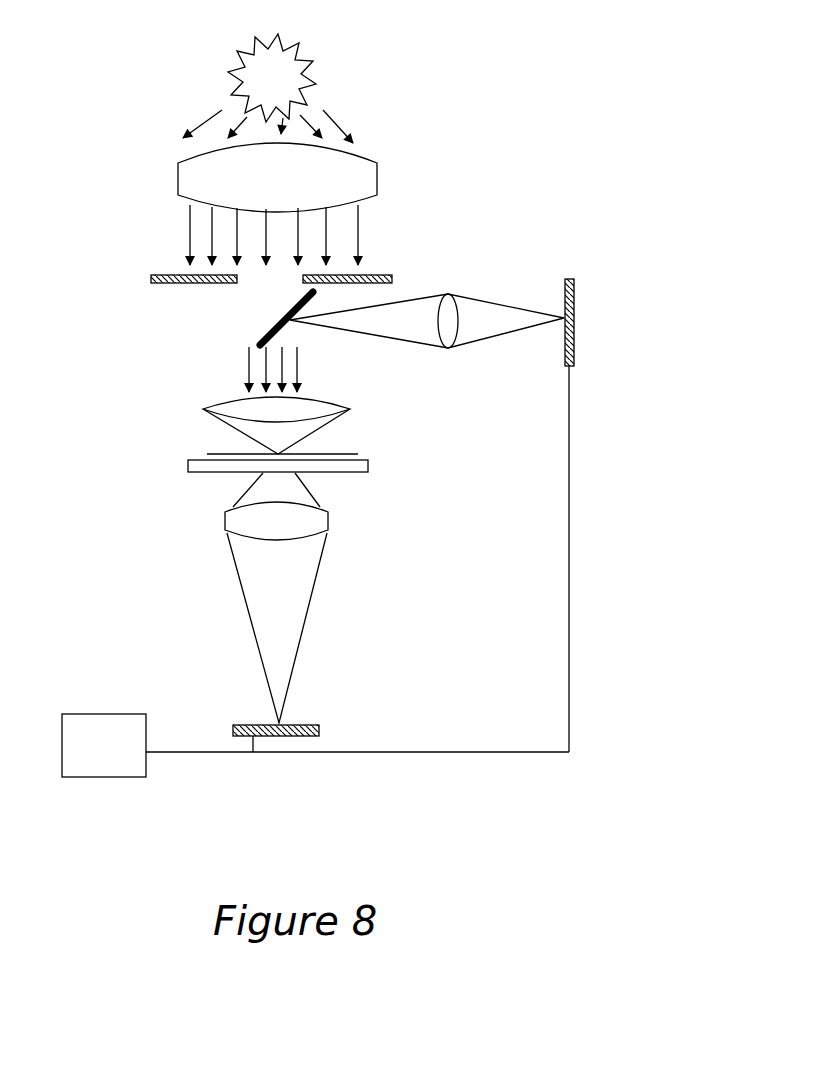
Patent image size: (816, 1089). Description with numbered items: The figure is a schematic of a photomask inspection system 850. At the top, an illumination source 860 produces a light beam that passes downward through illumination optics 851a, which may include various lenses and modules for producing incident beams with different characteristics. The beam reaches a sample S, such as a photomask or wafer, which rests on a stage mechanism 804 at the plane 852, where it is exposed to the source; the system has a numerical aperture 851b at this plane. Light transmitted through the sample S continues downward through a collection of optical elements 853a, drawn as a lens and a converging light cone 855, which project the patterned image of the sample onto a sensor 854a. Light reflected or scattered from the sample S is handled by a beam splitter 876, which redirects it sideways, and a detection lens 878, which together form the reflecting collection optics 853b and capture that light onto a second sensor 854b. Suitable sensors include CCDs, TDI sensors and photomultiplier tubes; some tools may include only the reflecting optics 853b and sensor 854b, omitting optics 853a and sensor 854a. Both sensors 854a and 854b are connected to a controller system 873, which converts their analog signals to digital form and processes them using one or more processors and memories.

The inspection system 850 is at (402, 77).
The illumination source 860 is at (302, 52).
The illumination optics 851a is at (127, 178).
The beam splitter 876 is at (280, 322).
The numerical aperture 851b is at (310, 436).
The reflecting collection optics 853b is at (565, 297).
The detection lens 878 is at (448, 323).
The sensor 854b is at (568, 280).
The plane 852 is at (197, 454).
The sample S is at (358, 454).
The stage mechanism 804 is at (368, 464).
The collection of optical elements 853a is at (172, 463).
The transmitted light cone 855 is at (275, 612).
The sensor 854a is at (303, 718).
The controller system 873 is at (315, 745).